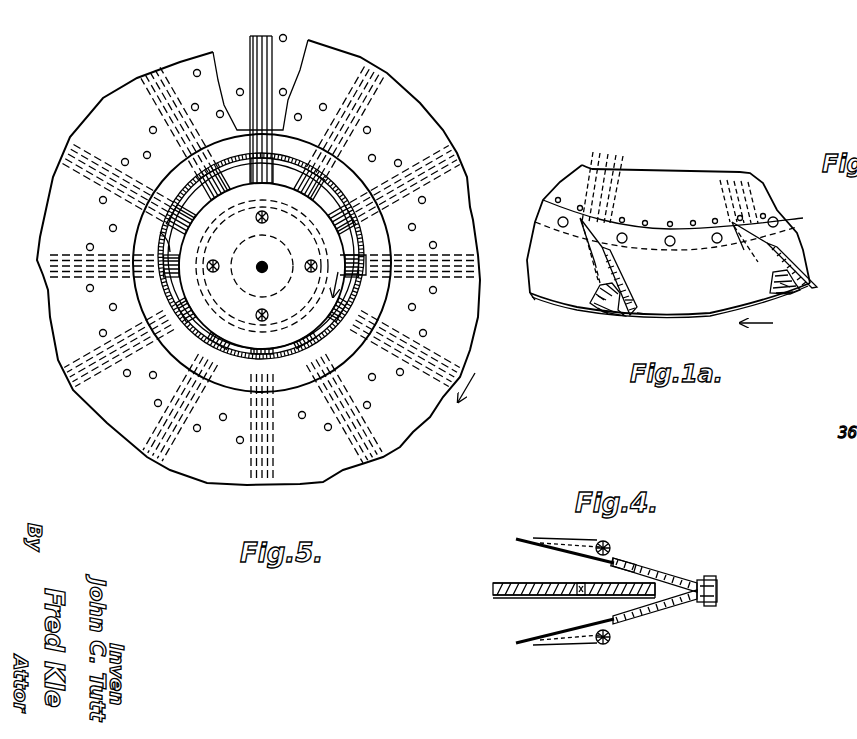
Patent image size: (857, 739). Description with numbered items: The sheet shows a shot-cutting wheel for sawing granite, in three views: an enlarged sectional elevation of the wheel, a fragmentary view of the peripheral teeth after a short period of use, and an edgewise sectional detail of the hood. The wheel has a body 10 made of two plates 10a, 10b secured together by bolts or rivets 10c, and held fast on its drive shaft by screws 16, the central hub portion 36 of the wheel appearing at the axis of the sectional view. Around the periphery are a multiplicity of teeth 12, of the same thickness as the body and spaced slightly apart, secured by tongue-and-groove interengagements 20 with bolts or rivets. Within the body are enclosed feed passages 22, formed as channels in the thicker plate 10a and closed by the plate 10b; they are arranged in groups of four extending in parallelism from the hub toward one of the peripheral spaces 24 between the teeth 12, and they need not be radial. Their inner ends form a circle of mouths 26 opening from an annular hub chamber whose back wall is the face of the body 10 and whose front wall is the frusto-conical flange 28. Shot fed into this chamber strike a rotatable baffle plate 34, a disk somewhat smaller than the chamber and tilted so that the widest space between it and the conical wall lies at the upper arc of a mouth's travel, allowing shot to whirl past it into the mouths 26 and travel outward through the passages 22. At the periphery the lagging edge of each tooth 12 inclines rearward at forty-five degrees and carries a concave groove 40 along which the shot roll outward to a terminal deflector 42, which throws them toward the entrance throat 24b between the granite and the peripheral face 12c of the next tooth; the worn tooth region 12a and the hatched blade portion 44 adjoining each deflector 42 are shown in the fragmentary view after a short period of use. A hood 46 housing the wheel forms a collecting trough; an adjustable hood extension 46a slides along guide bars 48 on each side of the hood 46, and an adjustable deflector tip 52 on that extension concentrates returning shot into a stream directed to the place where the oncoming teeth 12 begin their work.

In FIG. 4, the wheel body 10 is at (503, 597).
In FIG. 4, the thicker plate 10a is at (510, 583).
In FIG. 1a, the plate 10b is at (684, 183).
In FIG. 5, the bolts or rivets 10c is at (147, 151).
In FIG. 1a, the teeth 12 is at (668, 241).
In FIG. 4, the teeth 12 is at (597, 597).
In FIG. 1a, the cutting edge 12a is at (633, 297).
In FIG. 1a, the peripheral face of tooth 12c is at (530, 295).
In FIG. 5, the screws 16 is at (273, 224).
In FIG. 4, the tongue-and-groove interengagement 20 is at (575, 587).
In FIG. 5, the feed passages 22 is at (262, 63).
In FIG. 1a, the feed passages 22 is at (670, 180).
In FIG. 1a, the peripheral spaces 24 is at (582, 232).
In FIG. 1a, the entrance throat 24b is at (640, 318).
In FIG. 5, the mouths 26 is at (163, 243).
In FIG. 5, the frusto-conical flange 28 is at (360, 290).
In FIG. 5, the baffle plate 34 is at (367, 230).
In FIG. 5, the hub shaft 36 is at (273, 274).
In FIG. 1a, the groove 40 is at (610, 293).
In FIG. 1a, the terminal deflector 42 is at (630, 317).
In FIG. 1a, the blade 44 is at (617, 265).
In FIG. 4, the hood 46 is at (522, 646).
In FIG. 4, the hood extension 46a is at (610, 620).
In FIG. 4, the guide bars 48 is at (610, 547).
In FIG. 4, the deflector tip 52 is at (667, 607).